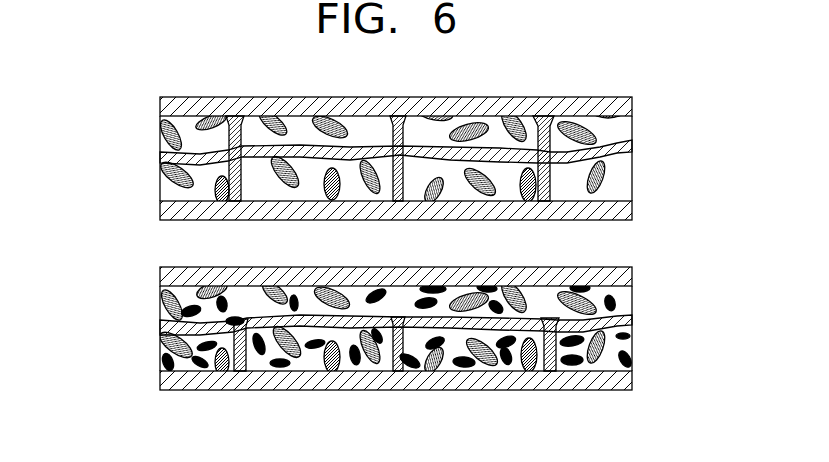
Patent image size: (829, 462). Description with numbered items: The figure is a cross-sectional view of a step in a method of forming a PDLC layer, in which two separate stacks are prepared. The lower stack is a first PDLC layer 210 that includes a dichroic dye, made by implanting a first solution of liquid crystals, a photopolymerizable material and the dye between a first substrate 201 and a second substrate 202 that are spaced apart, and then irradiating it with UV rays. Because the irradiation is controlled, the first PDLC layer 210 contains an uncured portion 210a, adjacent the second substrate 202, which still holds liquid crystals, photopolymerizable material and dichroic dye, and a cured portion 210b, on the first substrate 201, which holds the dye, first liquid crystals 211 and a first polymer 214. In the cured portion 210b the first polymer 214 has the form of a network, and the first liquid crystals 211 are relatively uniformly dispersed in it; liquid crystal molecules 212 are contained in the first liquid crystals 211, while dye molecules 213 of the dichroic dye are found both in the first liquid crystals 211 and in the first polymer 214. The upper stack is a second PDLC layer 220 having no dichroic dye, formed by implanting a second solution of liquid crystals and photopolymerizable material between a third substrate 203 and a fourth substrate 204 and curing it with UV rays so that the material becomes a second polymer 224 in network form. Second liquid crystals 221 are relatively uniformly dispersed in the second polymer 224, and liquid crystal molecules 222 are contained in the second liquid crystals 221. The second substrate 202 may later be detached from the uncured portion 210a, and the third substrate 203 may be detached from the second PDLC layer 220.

The first substrate 201 is at (633, 381).
The second substrate 202 is at (633, 276).
The third substrate 203 is at (633, 209).
The fourth substrate 204 is at (633, 107).
The first PDLC layer 210 is at (145, 287).
The uncured portion 210a is at (645, 283).
The cured portion 210b is at (699, 317).
The first liquid crystals 211 is at (633, 337).
The liquid crystal molecules 212 is at (593, 340).
The dye molecules 213 is at (633, 363).
The first polymer 214 is at (633, 318).
The second PDLC layer 220 is at (145, 118).
The second liquid crystals 221 is at (612, 182).
The liquid crystal molecules 222 is at (633, 164).
The second polymer 224 is at (633, 147).